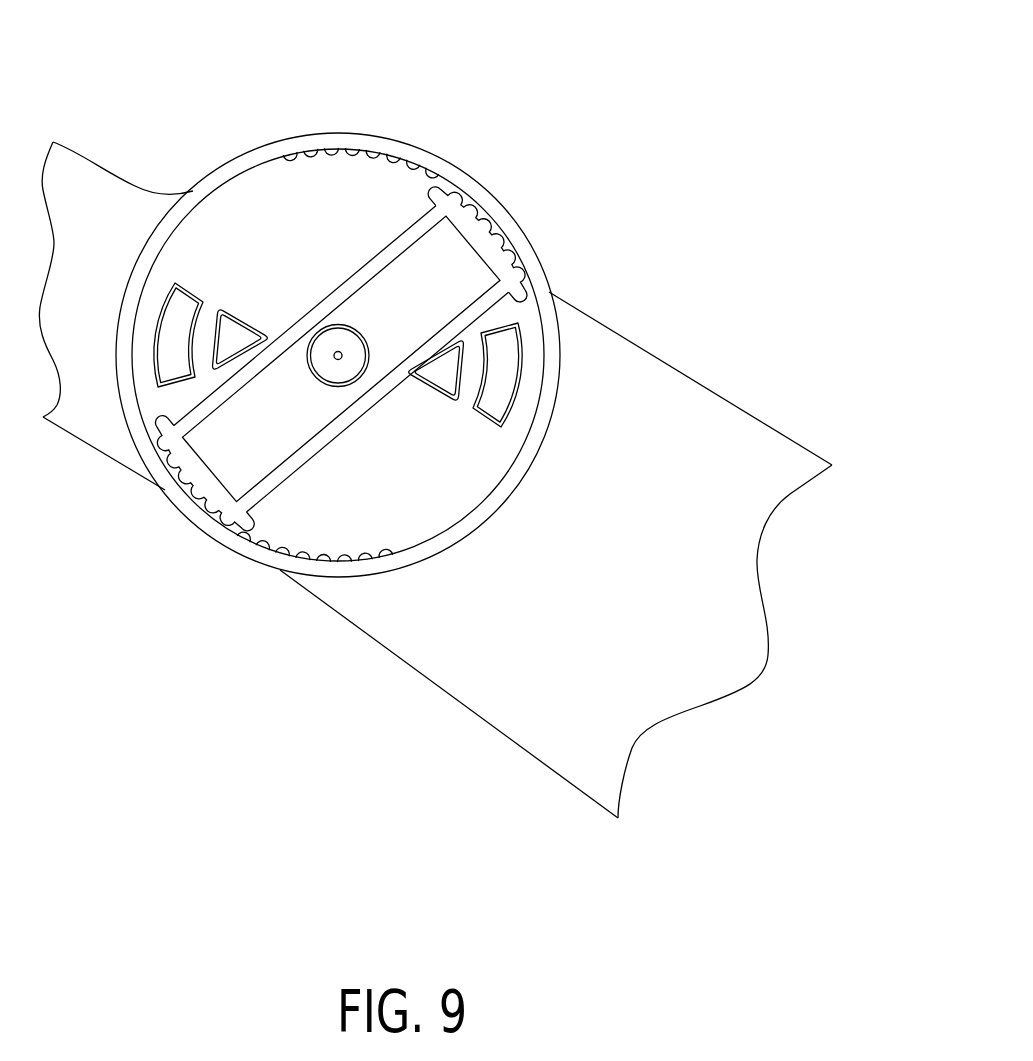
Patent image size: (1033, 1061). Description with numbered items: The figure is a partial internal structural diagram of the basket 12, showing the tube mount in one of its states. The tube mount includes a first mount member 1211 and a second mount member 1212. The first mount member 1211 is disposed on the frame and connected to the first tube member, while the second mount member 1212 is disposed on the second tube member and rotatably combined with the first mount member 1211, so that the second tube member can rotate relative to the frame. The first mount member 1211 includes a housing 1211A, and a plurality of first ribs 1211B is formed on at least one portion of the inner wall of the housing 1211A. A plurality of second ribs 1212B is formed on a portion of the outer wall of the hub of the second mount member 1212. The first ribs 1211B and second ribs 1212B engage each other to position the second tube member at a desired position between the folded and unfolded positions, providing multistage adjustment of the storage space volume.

The basket 12 is at (712, 72).
The first mount member 1211 is at (688, 411).
The housing 1211A is at (538, 285).
The first ribs 1211B is at (353, 156).
The second mount member 1212 is at (333, 297).
The second ribs 1212B is at (441, 186).